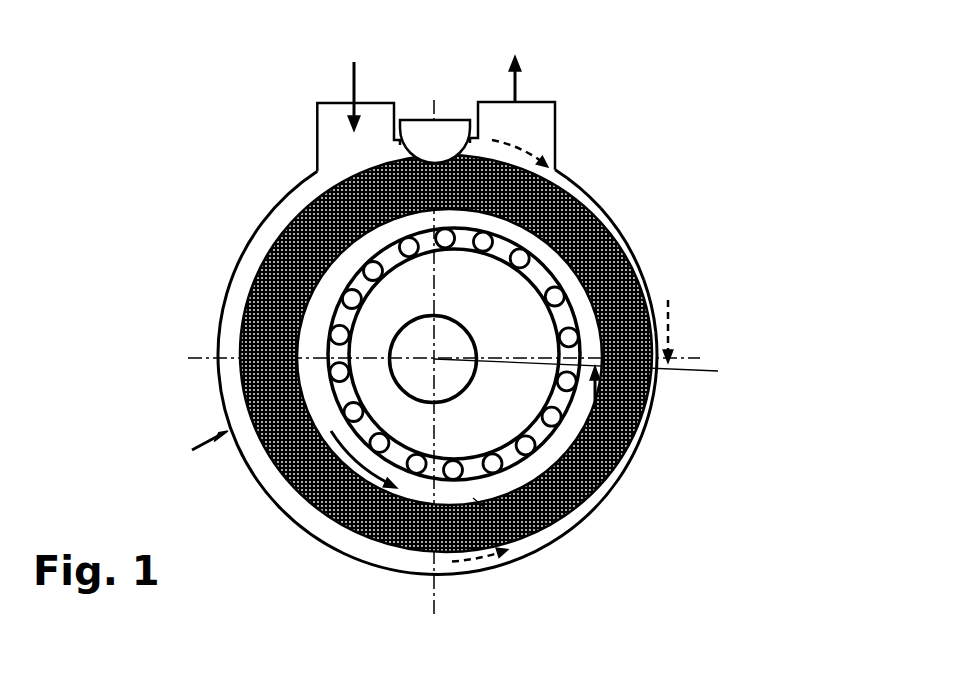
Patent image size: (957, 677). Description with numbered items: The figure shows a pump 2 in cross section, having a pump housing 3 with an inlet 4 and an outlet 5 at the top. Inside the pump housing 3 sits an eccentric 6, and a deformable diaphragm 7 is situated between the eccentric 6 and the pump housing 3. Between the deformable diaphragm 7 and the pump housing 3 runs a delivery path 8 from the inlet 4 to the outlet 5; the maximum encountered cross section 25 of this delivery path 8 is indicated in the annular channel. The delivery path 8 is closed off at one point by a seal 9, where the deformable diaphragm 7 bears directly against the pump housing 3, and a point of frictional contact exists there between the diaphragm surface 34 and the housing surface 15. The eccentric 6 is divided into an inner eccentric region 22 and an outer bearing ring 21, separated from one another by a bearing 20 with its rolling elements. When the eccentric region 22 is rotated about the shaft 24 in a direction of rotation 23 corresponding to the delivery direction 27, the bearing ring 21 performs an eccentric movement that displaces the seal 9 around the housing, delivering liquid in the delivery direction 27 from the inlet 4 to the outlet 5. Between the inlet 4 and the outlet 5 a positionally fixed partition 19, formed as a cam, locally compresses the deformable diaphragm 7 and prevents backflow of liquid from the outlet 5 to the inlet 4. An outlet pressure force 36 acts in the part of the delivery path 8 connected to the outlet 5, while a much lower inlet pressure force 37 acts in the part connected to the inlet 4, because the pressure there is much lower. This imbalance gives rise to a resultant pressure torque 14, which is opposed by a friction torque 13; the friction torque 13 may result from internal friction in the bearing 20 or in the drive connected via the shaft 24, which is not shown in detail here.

The pump 2 is at (233, 156).
The pump housing 3 is at (217, 325).
The inlet 4 is at (318, 102).
The outlet 5 is at (478, 102).
The eccentric 6 is at (533, 535).
The deformable diaphragm 7 is at (652, 294).
The delivery path 8 is at (403, 558).
The seal 9 is at (560, 168).
The friction torque 13 is at (653, 397).
The resultant pressure torque 14 is at (673, 332).
The housing surface 15 is at (266, 472).
The partition 19 is at (434, 119).
The bearing 20 is at (570, 273).
The bearing ring 21 is at (542, 262).
The eccentric region 22 is at (486, 268).
The direction of rotation 23 is at (310, 510).
The shaft 24 is at (434, 358).
The cross section 25 is at (256, 244).
The delivery direction 27 is at (354, 62).
The diaphragm surface 34 is at (283, 507).
The outlet pressure force 36 is at (507, 142).
The inlet pressure force 37 is at (477, 562).